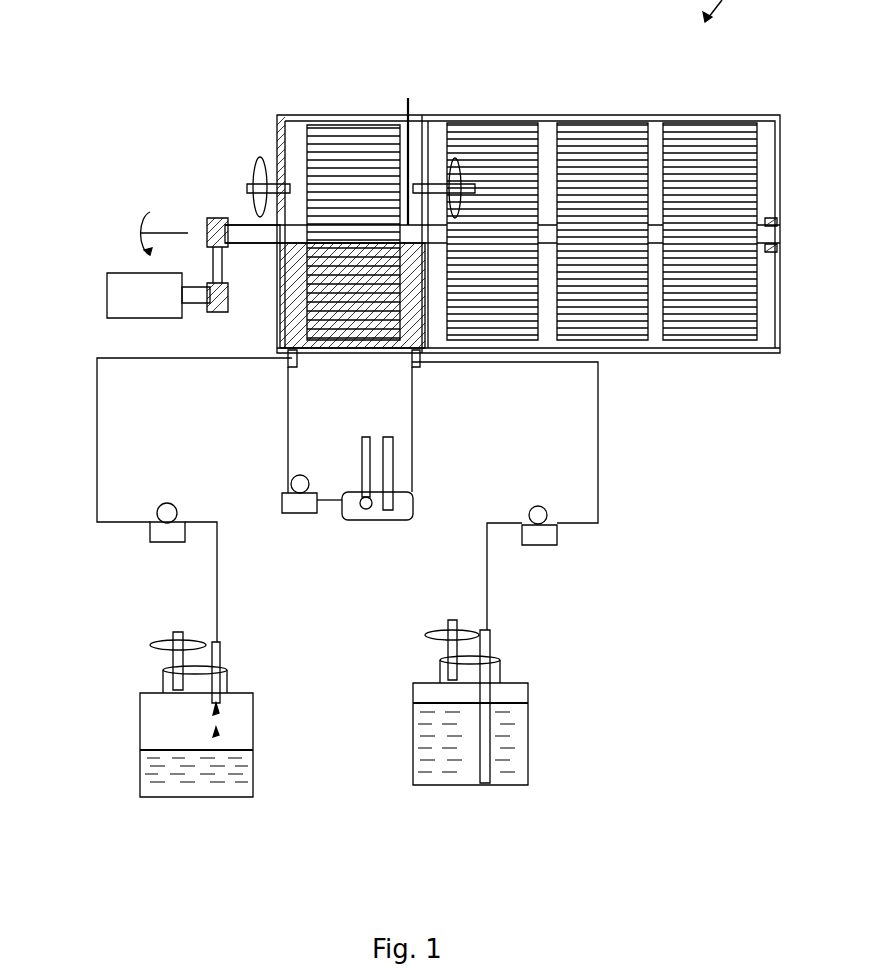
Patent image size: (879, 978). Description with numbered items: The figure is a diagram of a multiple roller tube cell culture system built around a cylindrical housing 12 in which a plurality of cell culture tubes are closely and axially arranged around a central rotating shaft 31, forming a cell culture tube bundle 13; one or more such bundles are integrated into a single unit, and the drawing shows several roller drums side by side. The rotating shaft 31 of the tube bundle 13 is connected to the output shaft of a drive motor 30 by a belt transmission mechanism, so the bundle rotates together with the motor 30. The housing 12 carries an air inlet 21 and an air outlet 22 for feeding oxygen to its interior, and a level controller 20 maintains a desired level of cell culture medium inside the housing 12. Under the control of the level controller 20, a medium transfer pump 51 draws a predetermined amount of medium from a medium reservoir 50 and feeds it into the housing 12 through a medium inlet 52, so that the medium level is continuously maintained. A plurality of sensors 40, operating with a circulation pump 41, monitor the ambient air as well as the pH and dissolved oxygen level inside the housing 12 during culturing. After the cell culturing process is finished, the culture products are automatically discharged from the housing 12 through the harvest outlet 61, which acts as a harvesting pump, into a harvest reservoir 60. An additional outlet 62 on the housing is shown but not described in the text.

The cylindrical housing 12 is at (333, 116).
The cell culture tube bundle 13 is at (383, 126).
The level controller 20 is at (410, 100).
The air inlet 21 is at (460, 178).
The air outlet 22 is at (255, 218).
The drive motor 30 is at (110, 292).
The rotating shaft 31 is at (245, 226).
The sensors 40 is at (362, 520).
The circulation pump 41 is at (283, 497).
The medium reservoir 50 is at (460, 785).
The medium transfer pump 51 is at (552, 547).
The medium inlet 52 is at (417, 366).
The harvest reservoir 60 is at (175, 797).
The harvest outlet 61 is at (150, 540).
The outlet 62 is at (288, 360).